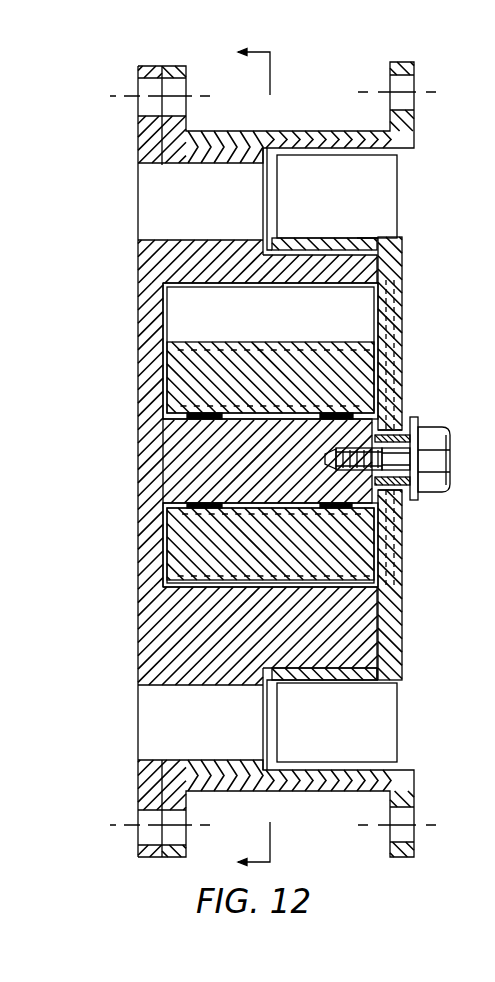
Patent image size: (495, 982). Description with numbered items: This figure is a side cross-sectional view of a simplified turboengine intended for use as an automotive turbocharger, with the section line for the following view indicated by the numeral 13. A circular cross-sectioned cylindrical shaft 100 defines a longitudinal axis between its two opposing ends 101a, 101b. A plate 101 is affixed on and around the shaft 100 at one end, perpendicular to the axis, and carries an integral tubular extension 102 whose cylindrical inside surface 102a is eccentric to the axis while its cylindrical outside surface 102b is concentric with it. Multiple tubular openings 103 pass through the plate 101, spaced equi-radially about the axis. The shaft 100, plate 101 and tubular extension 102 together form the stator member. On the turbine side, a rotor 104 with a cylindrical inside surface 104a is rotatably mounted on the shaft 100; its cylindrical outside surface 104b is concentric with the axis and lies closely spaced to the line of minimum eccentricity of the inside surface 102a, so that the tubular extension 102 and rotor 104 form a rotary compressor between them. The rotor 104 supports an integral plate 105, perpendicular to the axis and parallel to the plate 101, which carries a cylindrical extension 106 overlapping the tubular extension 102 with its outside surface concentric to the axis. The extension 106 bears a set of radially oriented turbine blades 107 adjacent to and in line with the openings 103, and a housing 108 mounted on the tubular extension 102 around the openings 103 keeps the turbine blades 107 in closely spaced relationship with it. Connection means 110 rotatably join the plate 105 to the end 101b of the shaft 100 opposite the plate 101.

The cylindrical shaft 100 is at (290, 433).
The plate 101 is at (153, 385).
The end of shaft 101a is at (138, 493).
The end of shaft 101b is at (378, 415).
The tubular extension 102 is at (178, 250).
The cylindrical inside surface 102a is at (388, 298).
The cylindrical outside surface 102b is at (360, 240).
The tubular openings 103 is at (207, 459).
The rotor 104 is at (230, 358).
The cylindrical inside surface 104a is at (313, 517).
The cylindrical outside surface 104b is at (300, 580).
The plate 105 is at (394, 262).
The cylindrical extension 106 is at (337, 257).
The turbine blades 107 is at (317, 200).
The housing 108 is at (284, 130).
The connection means 110 is at (433, 435).
The section line 13- 13 is at (252, 446).